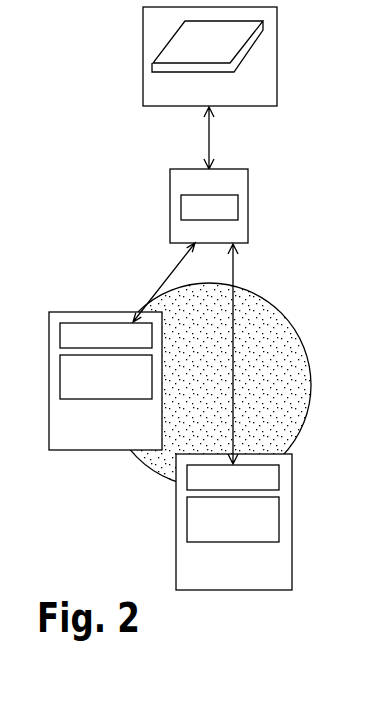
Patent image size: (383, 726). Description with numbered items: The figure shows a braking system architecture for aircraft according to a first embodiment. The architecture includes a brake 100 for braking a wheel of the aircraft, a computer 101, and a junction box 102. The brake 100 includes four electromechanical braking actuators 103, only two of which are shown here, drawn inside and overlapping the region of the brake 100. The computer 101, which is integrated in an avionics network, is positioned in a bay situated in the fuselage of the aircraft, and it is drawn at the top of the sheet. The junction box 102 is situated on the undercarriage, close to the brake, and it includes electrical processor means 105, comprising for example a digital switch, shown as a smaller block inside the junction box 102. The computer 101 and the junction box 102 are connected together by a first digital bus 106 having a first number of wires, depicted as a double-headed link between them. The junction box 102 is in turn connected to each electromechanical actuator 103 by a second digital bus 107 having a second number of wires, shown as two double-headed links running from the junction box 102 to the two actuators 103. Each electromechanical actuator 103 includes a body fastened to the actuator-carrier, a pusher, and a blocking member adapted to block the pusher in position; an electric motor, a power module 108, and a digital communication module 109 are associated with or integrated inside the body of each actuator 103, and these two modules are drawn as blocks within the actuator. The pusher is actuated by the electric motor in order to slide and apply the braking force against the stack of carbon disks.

The brake 100 is at (310, 367).
The computer 101 is at (277, 63).
The junction box 102 is at (248, 185).
The electromechanical braking actuator 103 is at (80, 452).
The electrical processor means 105 is at (223, 208).
The first digital bus 106 is at (211, 143).
The second digital bus 107 is at (166, 280).
The power module 108 is at (72, 380).
The digital communication module 109 is at (72, 337).